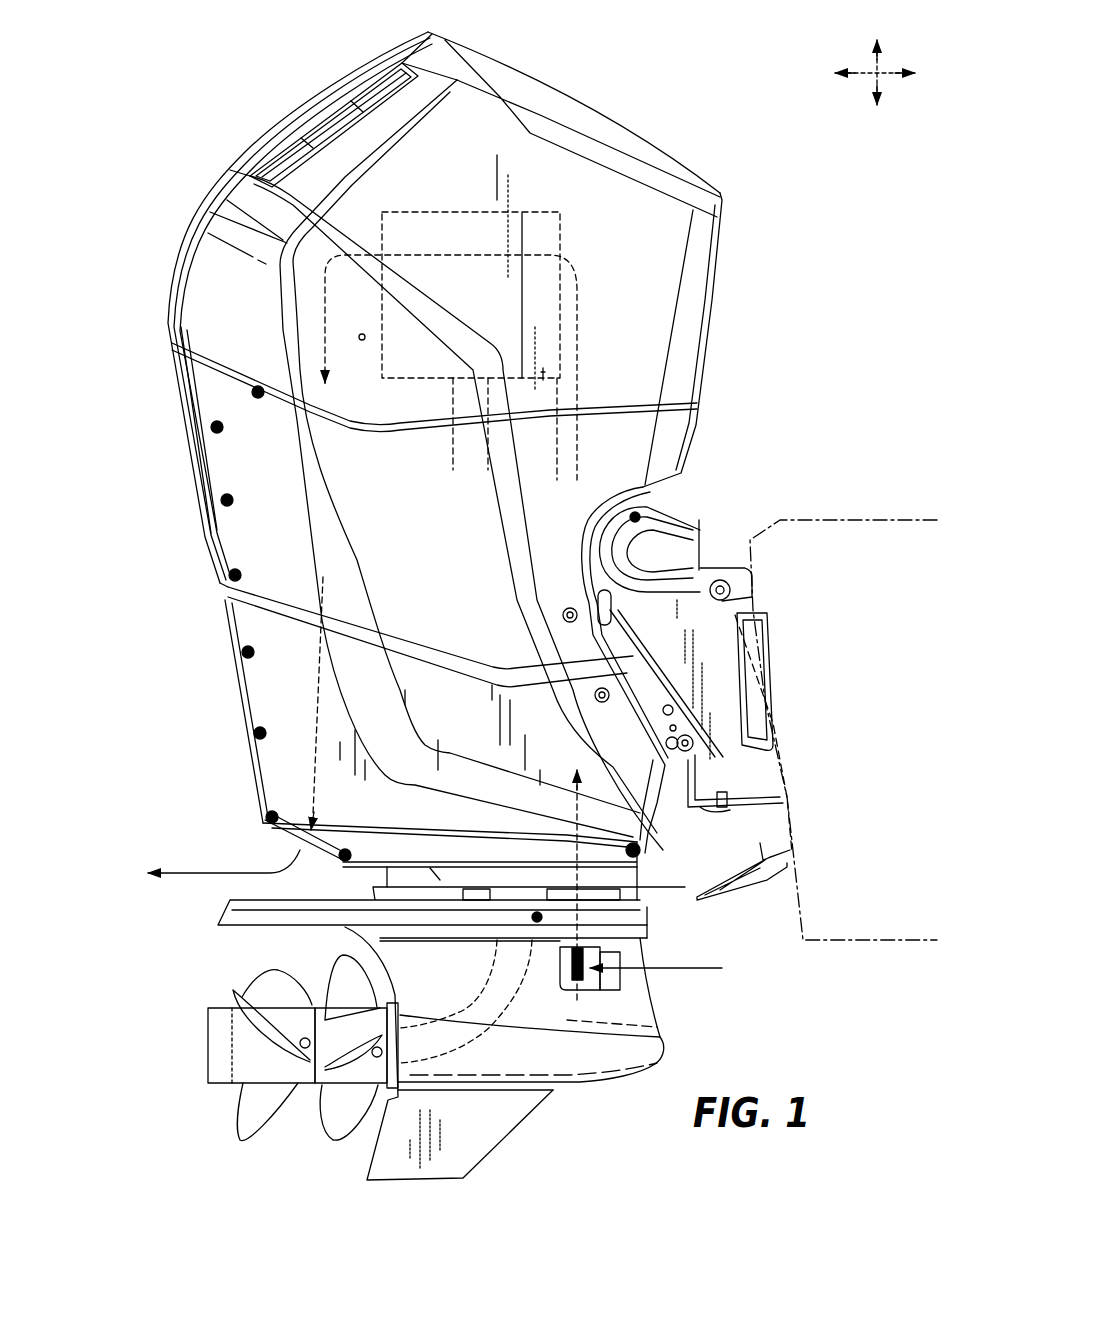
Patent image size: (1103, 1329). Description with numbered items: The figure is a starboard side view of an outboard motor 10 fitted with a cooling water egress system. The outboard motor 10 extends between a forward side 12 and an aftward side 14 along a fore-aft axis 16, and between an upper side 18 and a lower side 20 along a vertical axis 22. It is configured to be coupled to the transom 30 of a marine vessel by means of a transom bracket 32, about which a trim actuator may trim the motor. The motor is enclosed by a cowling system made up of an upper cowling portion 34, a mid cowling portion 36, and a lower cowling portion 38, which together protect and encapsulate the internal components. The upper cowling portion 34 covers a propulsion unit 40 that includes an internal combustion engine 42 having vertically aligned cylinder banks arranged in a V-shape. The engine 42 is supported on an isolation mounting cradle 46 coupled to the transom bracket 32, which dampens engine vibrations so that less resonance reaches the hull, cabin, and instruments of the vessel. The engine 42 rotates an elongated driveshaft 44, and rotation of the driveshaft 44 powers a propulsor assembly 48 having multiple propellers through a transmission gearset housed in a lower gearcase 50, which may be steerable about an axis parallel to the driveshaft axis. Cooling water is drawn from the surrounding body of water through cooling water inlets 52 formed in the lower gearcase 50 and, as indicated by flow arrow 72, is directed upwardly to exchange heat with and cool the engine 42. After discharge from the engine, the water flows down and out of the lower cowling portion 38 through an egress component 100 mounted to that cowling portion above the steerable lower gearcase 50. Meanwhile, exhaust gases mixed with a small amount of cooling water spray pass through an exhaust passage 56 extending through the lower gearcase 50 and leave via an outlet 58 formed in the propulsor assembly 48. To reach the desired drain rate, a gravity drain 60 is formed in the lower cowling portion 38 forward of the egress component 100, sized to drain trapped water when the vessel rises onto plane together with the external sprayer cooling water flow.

The outboard motor 10 is at (230, 46).
The forward side 12 is at (836, 278).
The aftward side 14 is at (110, 242).
The fore-aft axis 16 is at (890, 77).
The upper side 18 is at (722, 131).
The lower side 20 is at (546, 1065).
The vertical axis 22 is at (878, 58).
The transom 30 is at (838, 520).
The transom bracket 32 is at (743, 765).
The upper cowling portion 34 is at (255, 158).
The mid cowling portion 36 is at (242, 455).
The lower cowling portion 38 is at (278, 692).
The propulsion unit 40 is at (583, 220).
The internal combustion engine 42 is at (482, 208).
The driveshaft 44 is at (450, 432).
The isolation mounting cradle 46 is at (640, 500).
The propulsor assembly 48 is at (247, 1156).
The lower gearcase 50 is at (652, 1003).
The cooling water inlets 52 is at (587, 978).
The exhaust passage 56 is at (455, 1050).
The outlet 58 is at (202, 1043).
The gravity drain 60 is at (362, 880).
The flow arrow 72 is at (578, 316).
The egress component 100 is at (297, 857).